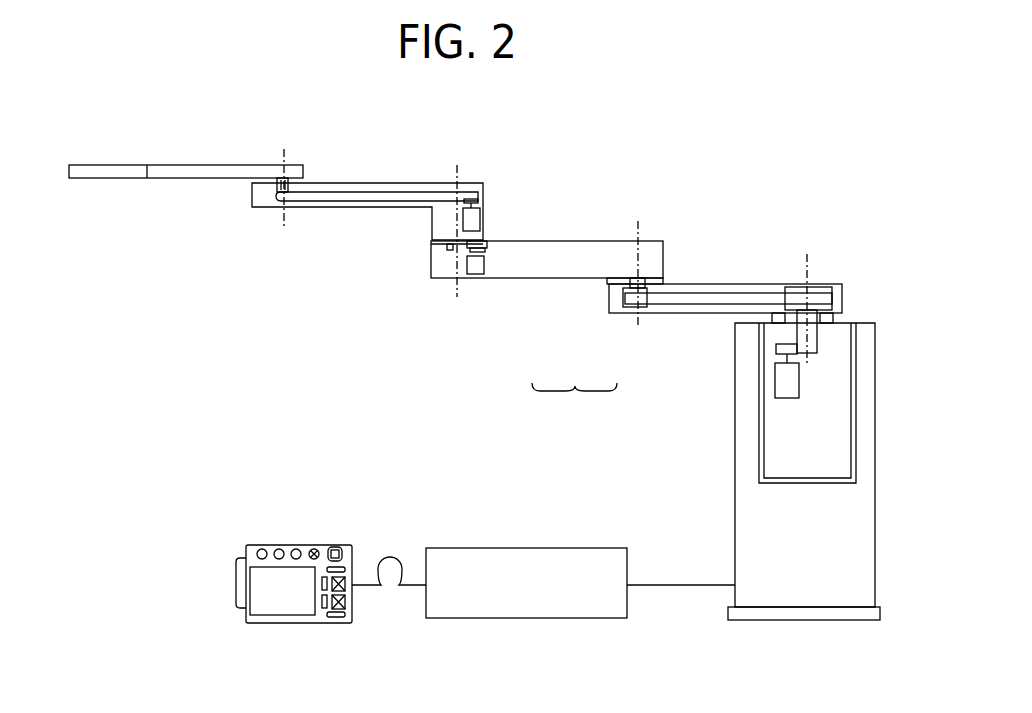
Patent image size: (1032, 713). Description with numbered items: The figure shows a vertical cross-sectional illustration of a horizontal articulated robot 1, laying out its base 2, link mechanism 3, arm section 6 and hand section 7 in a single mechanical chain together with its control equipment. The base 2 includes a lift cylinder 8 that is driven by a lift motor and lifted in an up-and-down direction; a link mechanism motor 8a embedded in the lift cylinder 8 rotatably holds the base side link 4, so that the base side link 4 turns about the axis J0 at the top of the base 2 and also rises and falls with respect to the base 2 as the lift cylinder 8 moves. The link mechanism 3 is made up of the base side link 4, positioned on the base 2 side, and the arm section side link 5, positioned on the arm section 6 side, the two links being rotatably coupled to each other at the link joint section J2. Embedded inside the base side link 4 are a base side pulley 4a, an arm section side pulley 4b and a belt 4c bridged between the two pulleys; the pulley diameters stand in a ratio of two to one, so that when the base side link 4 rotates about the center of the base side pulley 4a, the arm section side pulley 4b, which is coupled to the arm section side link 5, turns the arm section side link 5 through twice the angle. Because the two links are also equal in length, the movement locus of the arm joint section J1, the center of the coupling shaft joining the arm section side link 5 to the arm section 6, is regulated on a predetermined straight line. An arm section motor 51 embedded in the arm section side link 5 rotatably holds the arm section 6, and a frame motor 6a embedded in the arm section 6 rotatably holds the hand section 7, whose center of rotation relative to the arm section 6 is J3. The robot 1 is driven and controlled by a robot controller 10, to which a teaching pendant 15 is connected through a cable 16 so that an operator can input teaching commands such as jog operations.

The articulated robot 1 is at (778, 156).
The base 2 is at (743, 505).
The link mechanism 3 is at (574, 403).
The base side link 4 is at (618, 309).
The base side pulley 4a is at (823, 290).
The arm section side pulley 4b is at (647, 309).
The belt 4c is at (705, 297).
The arm section side link 5 is at (557, 271).
The arm section motor 51 is at (477, 273).
The arm section 6 is at (353, 207).
The frame motor 6a is at (471, 220).
The hand section 7 is at (173, 179).
The lift cylinder 8 is at (771, 425).
The link mechanism motor 8a is at (775, 388).
The robot controller 10 is at (517, 548).
The teaching pendant 15 is at (293, 545).
The cable 16 is at (390, 552).
The joint axis J0 is at (807, 251).
The arm joint section J1 is at (457, 162).
The link joint section J2 is at (638, 217).
The center of rotation of the hand section J3 is at (284, 147).